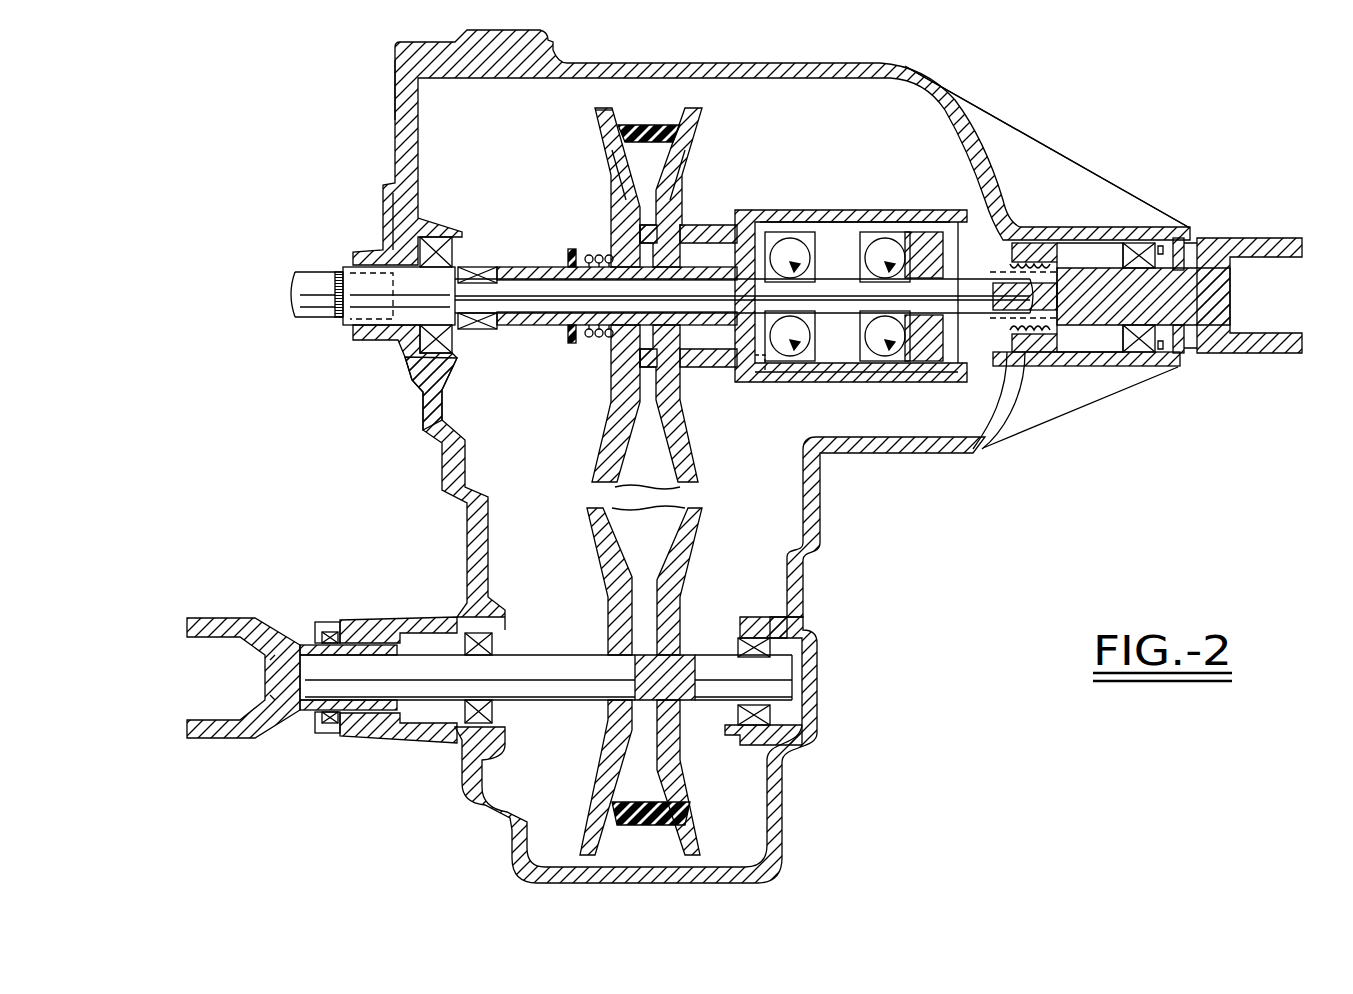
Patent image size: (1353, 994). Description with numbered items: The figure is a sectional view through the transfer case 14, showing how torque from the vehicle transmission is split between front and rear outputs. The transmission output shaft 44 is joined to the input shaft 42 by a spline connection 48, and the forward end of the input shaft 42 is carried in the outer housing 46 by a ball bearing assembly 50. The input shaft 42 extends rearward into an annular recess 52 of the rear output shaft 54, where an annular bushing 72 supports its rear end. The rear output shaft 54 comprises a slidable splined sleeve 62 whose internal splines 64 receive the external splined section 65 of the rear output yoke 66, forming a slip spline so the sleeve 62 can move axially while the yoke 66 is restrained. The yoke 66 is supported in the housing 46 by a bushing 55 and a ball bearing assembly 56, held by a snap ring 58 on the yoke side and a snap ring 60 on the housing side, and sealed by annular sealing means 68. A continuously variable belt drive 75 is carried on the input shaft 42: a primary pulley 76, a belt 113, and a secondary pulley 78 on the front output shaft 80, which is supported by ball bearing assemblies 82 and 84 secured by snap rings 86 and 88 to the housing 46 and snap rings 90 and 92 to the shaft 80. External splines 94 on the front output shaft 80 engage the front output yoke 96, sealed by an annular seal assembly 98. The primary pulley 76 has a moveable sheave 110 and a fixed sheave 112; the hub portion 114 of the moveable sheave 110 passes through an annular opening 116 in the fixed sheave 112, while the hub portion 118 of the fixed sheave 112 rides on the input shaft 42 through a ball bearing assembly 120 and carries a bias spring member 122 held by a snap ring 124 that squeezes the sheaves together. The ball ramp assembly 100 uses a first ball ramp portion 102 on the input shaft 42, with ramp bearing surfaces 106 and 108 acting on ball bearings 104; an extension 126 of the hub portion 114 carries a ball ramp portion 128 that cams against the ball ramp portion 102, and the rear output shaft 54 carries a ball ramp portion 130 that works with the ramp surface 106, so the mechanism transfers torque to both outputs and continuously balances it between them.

The transfer case 14 is at (348, 110).
The input shaft 42 is at (385, 327).
The transmission output shaft 44 is at (310, 278).
The outer housing 46 is at (396, 168).
The spline connection 48 is at (433, 243).
The ball bearing assembly 50 is at (440, 355).
The annular recess 52 is at (1130, 352).
The rear output shaft 54 is at (985, 245).
The bushing 55 is at (1025, 354).
The ball bearing assembly 56 is at (1150, 355).
The snap ring 58 is at (1120, 335).
The snap ring 60 is at (1180, 355).
The splined sleeve 62 is at (997, 342).
The internal splines 64 is at (1065, 266).
The external splined section 65 is at (1075, 325).
The rear output yoke 66 is at (1290, 355).
The annular sealing means 68 is at (1190, 333).
The annular bushing 72 is at (1062, 262).
The continuously variable belt drive 75 is at (582, 140).
The primary pulley 76 is at (702, 124).
The secondary pulley 78 is at (700, 820).
The front output shaft 80 is at (500, 690).
The ball bearing assembly 82 is at (475, 742).
The ball bearing assembly 84 is at (755, 727).
The snap ring 86 is at (488, 728).
The snap ring 88 is at (742, 636).
The snap ring 90 is at (478, 633).
The snap ring 92 is at (817, 637).
The external splines 94 is at (365, 620).
The front output yoke 96 is at (245, 618).
The annular seal assembly 98 is at (325, 632).
The ball ramp assembly 100 is at (852, 402).
The first ball ramp portion 102 is at (840, 230).
The ball bearings 104 is at (790, 240).
The ramp bearing surface 106 is at (862, 382).
The ramp bearing surface 108 is at (812, 362).
The moveable sheave 110 is at (612, 165).
The fixed sheave 112 is at (686, 165).
The belt 113 is at (652, 125).
The hub portion 114 is at (705, 225).
The annular opening 116 is at (655, 212).
The hub portion 118 is at (535, 267).
The ball bearing assembly 120 is at (480, 267).
The bias spring member 122 is at (592, 342).
The snap ring 124 is at (578, 332).
The extension 126 is at (827, 210).
The ball ramp portion 128 is at (760, 378).
The ball ramp portion 130 is at (920, 232).